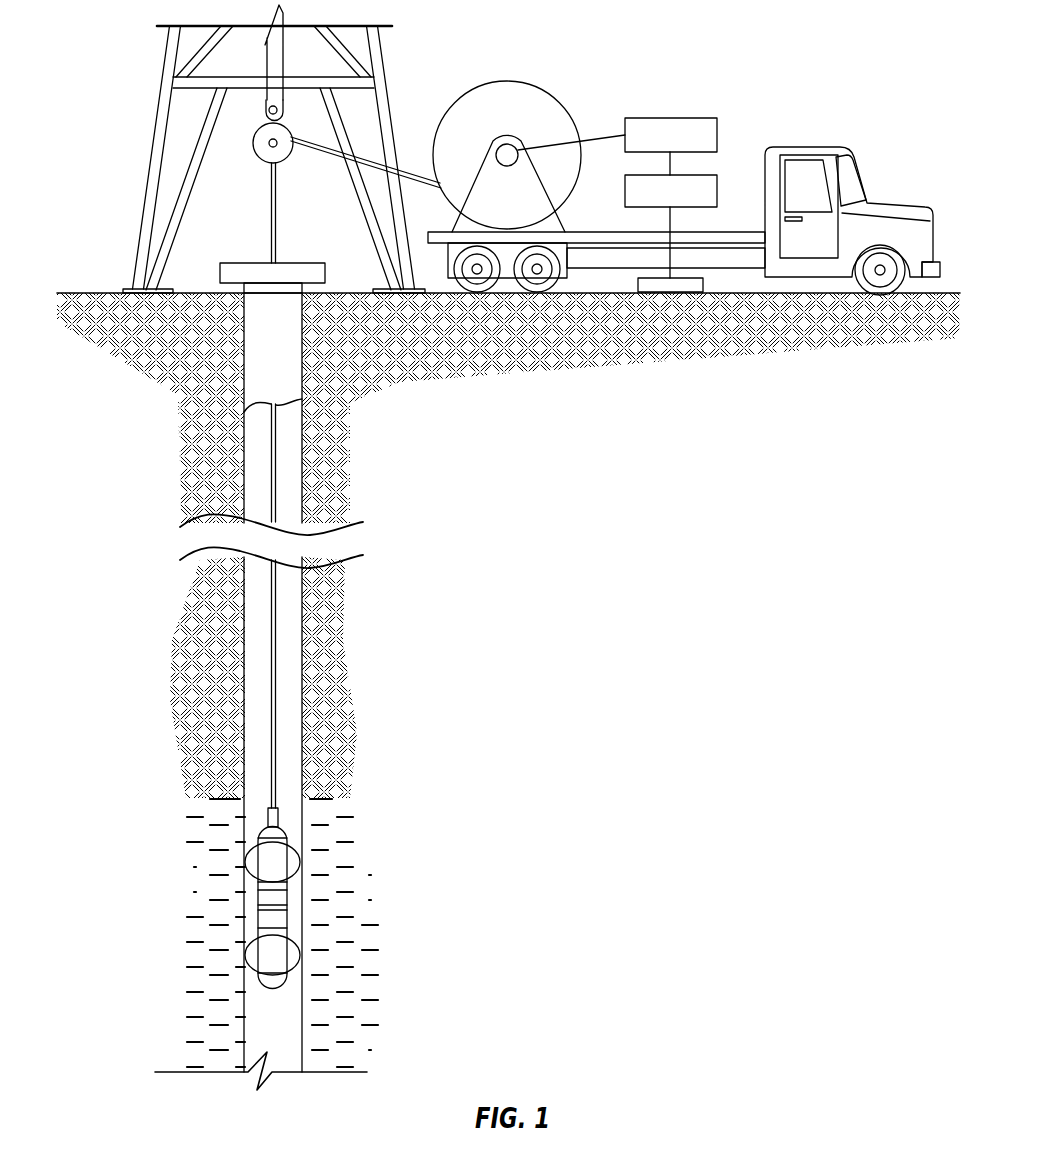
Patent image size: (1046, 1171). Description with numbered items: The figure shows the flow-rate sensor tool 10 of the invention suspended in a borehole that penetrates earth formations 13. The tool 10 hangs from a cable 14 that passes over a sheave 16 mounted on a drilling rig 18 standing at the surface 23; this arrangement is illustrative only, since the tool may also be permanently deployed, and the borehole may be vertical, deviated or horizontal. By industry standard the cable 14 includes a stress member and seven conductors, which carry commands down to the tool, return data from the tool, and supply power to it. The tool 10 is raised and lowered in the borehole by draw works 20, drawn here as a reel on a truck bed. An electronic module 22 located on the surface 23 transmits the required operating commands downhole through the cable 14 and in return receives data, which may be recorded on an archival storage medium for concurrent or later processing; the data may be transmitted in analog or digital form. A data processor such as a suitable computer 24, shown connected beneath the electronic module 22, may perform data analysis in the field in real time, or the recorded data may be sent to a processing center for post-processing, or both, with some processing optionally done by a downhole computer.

The flow-rate sensor tool 10 is at (289, 898).
The earth formations 13 is at (385, 642).
The cable 14 is at (270, 233).
The sheave 16 is at (253, 142).
The drilling rig 18 is at (164, 60).
The draw works 20 is at (508, 81).
The electronic module 22 is at (697, 118).
The surface 23 is at (103, 293).
The computer 24 is at (705, 175).